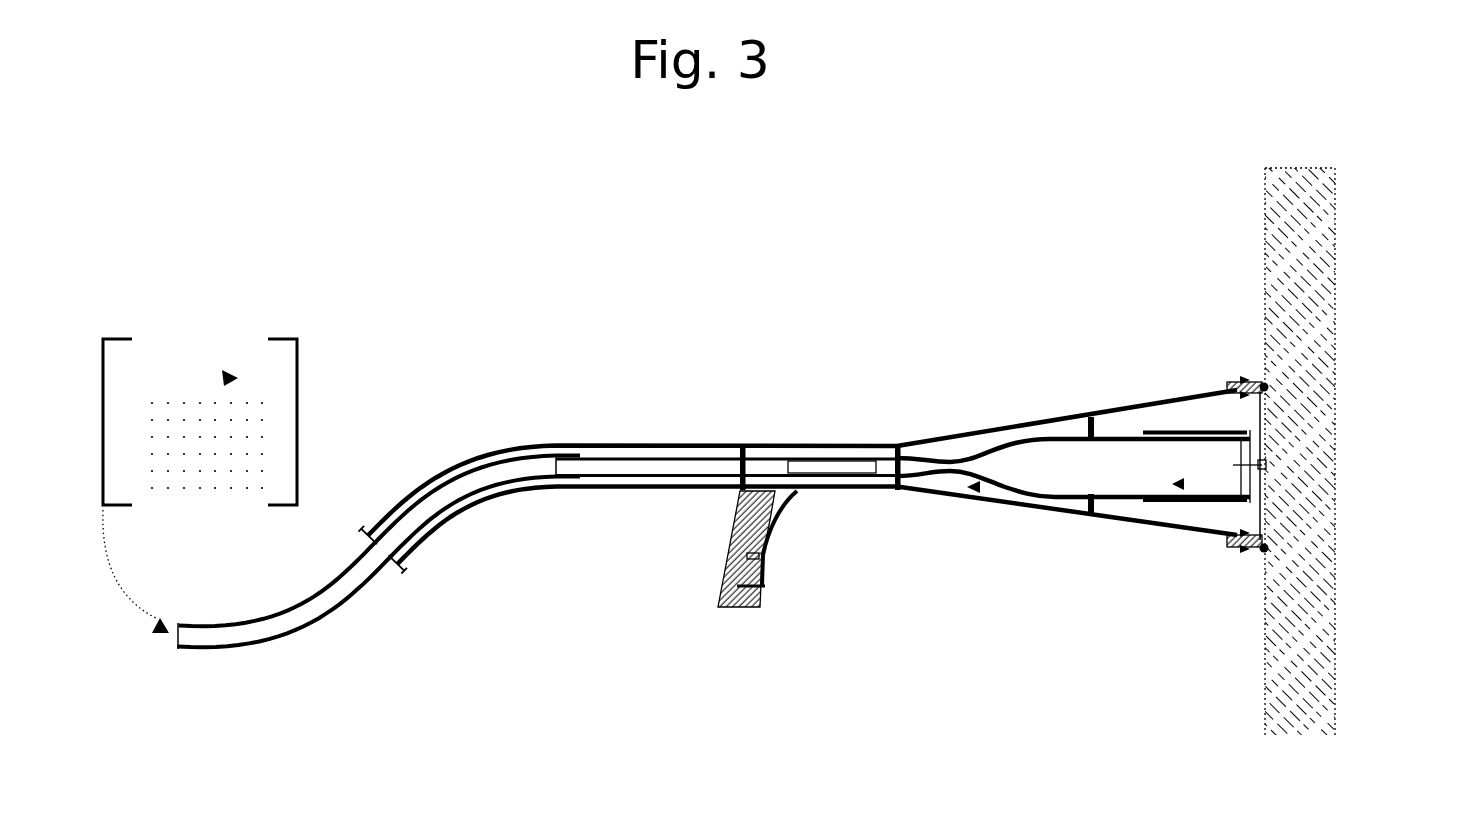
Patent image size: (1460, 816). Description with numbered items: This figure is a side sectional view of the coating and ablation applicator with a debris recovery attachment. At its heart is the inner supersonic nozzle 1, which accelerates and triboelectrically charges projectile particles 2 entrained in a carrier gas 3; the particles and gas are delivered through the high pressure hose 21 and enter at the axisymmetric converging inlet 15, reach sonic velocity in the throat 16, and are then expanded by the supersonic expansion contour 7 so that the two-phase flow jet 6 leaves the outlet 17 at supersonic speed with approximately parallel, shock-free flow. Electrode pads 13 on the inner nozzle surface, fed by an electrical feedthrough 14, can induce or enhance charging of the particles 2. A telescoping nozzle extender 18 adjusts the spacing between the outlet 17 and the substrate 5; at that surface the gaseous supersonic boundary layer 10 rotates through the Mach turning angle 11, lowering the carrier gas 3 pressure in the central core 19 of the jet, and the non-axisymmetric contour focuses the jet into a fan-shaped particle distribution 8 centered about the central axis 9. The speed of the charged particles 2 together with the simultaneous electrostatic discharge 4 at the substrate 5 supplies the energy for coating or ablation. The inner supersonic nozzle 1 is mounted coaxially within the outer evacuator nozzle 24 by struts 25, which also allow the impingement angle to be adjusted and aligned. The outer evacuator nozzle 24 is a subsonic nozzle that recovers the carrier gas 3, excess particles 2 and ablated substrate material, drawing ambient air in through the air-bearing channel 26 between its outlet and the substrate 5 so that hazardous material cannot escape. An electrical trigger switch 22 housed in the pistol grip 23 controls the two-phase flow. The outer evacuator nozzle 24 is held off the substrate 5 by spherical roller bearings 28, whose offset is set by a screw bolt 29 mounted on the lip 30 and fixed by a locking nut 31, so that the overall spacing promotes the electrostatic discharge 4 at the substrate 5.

The inner supersonic nozzle 1 is at (968, 497).
The projectile particles 2 is at (200, 430).
The carrier gas 3 is at (230, 372).
The electrostatic discharge 4 is at (1266, 487).
The substrate 5 is at (1266, 640).
The two-phase flow jet 6 is at (988, 448).
The supersonic expansion contour 7 is at (1040, 440).
The fan-shaped particle distribution 8 is at (1240, 470).
The central axis 9 is at (1268, 463).
The gaseous supersonic boundary layer 10 is at (1102, 415).
The Mach turning angle 11 is at (1268, 416).
The electrode pads 13 is at (843, 474).
The electrical feedthrough 14 is at (1148, 436).
The inlet 15 is at (737, 455).
The throat 16 is at (945, 440).
The outlet 17 is at (1256, 505).
The telescoping nozzle extender 18 is at (1086, 505).
The central core 19 is at (1200, 504).
The high pressure hose 21 is at (313, 623).
The electrical trigger switch 22 is at (767, 573).
The pistol grip 23 is at (722, 607).
The outer evacuator nozzle 24 is at (1002, 498).
The struts 25 is at (740, 447).
The air-bearing channel 26 is at (1268, 533).
The spherical roller bearings 28 is at (478, 515).
The screw bolt 29 is at (1190, 430).
The lip 30 is at (1254, 553).
The locking nut 31 is at (1247, 383).